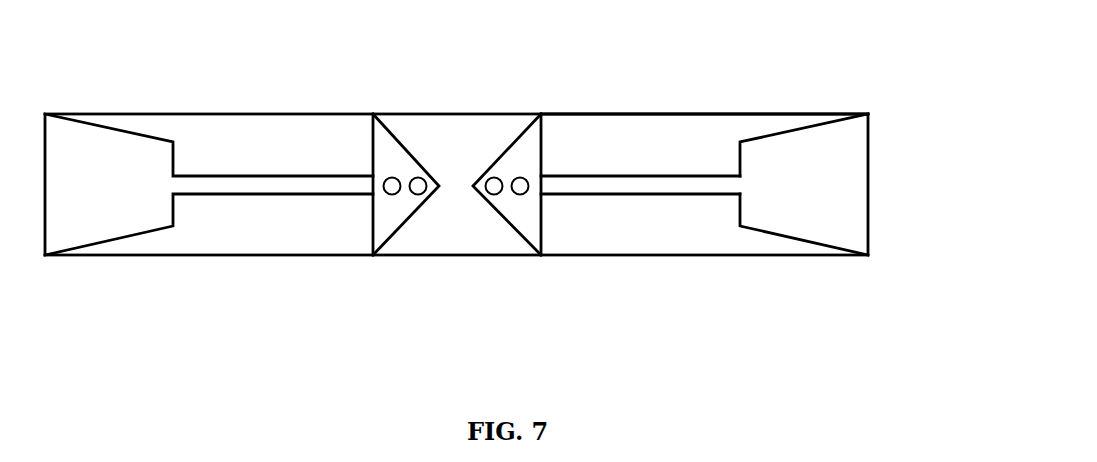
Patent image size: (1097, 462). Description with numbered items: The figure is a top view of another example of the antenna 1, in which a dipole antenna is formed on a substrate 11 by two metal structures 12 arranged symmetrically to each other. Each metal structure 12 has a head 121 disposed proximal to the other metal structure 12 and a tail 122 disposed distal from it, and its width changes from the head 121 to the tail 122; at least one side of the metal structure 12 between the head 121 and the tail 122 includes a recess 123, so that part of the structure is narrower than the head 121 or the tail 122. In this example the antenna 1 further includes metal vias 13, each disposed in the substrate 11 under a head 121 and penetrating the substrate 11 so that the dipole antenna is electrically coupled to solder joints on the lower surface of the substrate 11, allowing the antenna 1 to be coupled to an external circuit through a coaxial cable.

The antenna 1 is at (465, 245).
The substrate 11 is at (457, 246).
The metal structure 12 is at (649, 281).
The metal via 13 is at (513, 278).
The head 121 is at (474, 138).
The tail 122 is at (851, 193).
The recess 123 is at (734, 86).